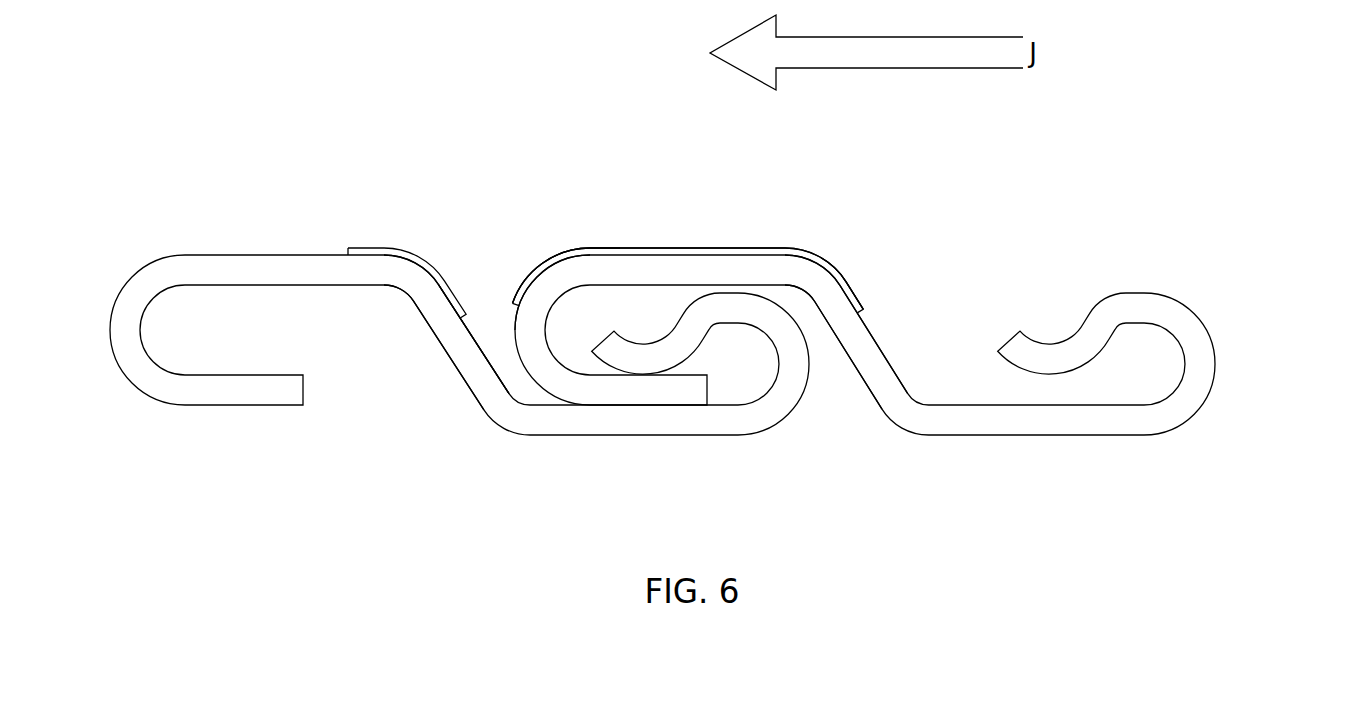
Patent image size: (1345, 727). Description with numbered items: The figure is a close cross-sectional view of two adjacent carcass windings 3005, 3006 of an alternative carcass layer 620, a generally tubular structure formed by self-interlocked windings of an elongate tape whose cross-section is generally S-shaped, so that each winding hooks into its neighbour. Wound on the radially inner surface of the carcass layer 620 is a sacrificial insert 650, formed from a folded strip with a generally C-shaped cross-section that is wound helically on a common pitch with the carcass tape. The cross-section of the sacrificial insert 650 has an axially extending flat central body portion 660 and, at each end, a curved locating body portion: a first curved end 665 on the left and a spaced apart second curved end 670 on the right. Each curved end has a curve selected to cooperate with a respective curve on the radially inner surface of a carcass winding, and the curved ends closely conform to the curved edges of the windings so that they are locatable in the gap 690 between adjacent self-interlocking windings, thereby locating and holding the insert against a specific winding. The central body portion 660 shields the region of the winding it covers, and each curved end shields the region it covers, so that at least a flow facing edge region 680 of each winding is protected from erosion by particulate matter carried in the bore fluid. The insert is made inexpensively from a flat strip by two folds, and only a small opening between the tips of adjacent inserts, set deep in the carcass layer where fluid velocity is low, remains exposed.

The carcass layer 620 is at (1266, 337).
The carcass winding 3005 is at (210, 393).
The carcass winding 3006 is at (1088, 428).
The sacrificial insert 650 is at (367, 248).
The central body portion 660 is at (650, 247).
The first curved end 665 is at (547, 254).
The second curved end 670 is at (848, 276).
The flow facing edge region 680 is at (433, 293).
The gap 690 is at (490, 303).